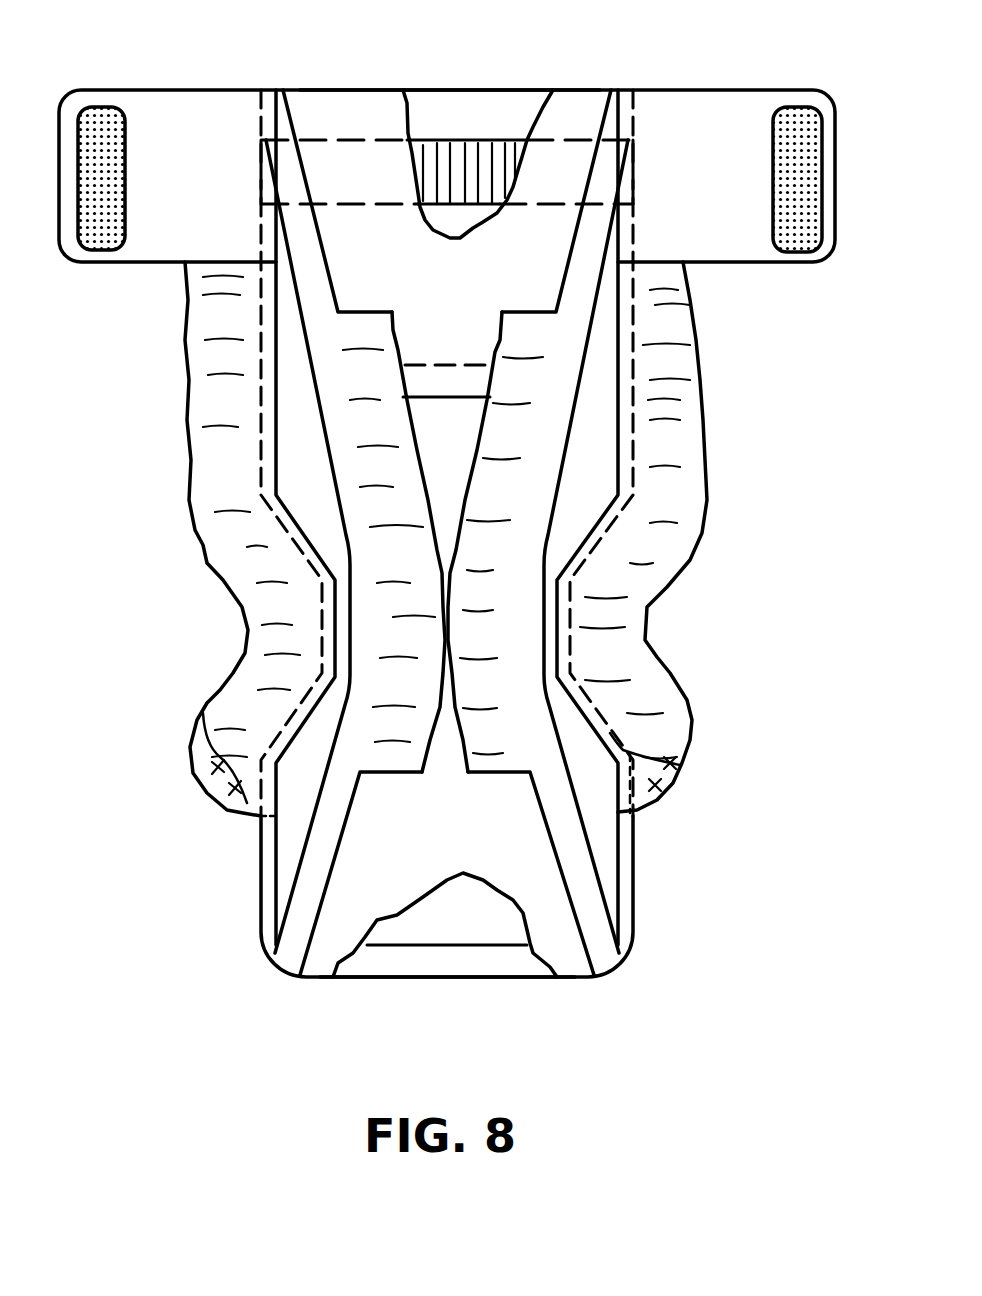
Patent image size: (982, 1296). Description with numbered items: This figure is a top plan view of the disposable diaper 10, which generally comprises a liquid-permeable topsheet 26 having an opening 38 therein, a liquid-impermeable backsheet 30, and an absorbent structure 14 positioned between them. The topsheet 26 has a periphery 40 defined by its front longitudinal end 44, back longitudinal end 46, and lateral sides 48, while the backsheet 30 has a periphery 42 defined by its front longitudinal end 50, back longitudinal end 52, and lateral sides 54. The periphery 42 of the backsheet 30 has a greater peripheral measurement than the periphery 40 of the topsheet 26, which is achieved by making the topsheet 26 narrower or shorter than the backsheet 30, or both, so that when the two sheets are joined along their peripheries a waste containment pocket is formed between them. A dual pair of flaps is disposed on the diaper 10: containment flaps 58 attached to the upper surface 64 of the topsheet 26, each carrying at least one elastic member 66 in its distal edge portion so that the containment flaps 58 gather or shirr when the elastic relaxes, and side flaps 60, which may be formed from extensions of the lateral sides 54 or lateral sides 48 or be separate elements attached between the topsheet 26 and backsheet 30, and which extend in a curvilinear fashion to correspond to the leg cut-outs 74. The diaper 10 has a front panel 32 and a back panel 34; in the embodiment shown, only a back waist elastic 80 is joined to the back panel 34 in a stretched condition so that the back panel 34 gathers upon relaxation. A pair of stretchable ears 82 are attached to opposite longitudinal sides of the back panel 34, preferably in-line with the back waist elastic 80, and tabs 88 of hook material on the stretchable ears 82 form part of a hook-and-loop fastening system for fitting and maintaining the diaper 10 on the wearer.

The diaper 10 is at (200, 943).
The absorbent structure 14 is at (388, 995).
The topsheet 26 is at (317, 963).
The backsheet 30 is at (517, 960).
The front panel 32 is at (700, 871).
The back panel 34 is at (152, 327).
The opening 38 is at (455, 448).
The periphery 40 is at (636, 380).
The periphery 42 is at (637, 440).
The front longitudinal end 44 is at (585, 978).
The back longitudinal end 46 is at (571, 89).
The lateral sides 48 is at (255, 387).
The front longitudinal end 50 is at (452, 978).
The back longitudinal end 52 is at (445, 88).
The lateral sides 54 is at (255, 462).
The containment flaps 58 is at (393, 326).
The side flaps 60 is at (215, 548).
The upper surface 64 is at (418, 819).
The elastic member 66 is at (440, 552).
The leg cut-outs 74 is at (194, 661).
The back waist elastic 80 is at (482, 150).
The stretchable ears 82 is at (196, 60).
The tabs 88 is at (107, 112).